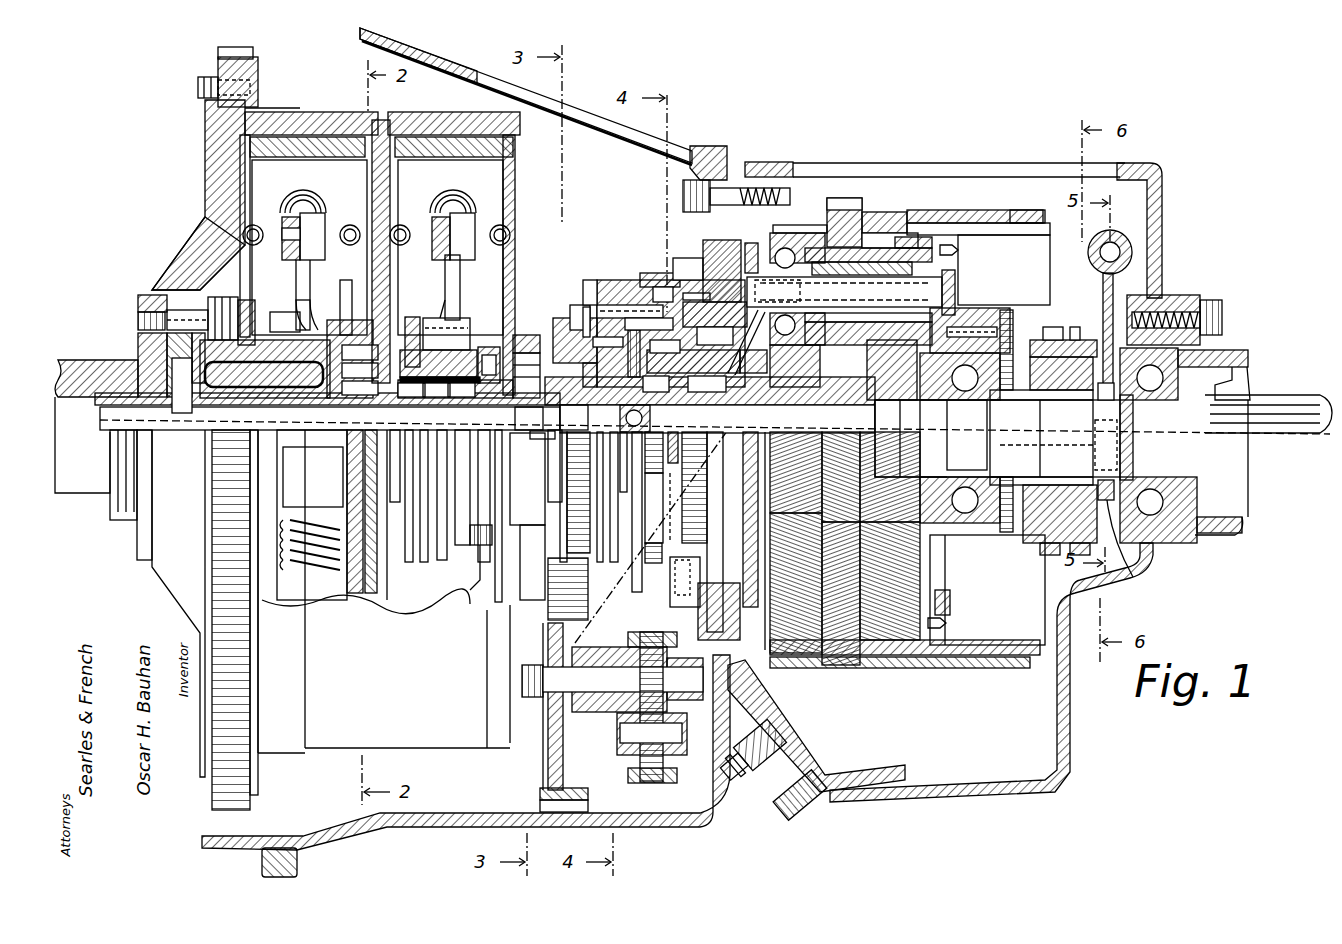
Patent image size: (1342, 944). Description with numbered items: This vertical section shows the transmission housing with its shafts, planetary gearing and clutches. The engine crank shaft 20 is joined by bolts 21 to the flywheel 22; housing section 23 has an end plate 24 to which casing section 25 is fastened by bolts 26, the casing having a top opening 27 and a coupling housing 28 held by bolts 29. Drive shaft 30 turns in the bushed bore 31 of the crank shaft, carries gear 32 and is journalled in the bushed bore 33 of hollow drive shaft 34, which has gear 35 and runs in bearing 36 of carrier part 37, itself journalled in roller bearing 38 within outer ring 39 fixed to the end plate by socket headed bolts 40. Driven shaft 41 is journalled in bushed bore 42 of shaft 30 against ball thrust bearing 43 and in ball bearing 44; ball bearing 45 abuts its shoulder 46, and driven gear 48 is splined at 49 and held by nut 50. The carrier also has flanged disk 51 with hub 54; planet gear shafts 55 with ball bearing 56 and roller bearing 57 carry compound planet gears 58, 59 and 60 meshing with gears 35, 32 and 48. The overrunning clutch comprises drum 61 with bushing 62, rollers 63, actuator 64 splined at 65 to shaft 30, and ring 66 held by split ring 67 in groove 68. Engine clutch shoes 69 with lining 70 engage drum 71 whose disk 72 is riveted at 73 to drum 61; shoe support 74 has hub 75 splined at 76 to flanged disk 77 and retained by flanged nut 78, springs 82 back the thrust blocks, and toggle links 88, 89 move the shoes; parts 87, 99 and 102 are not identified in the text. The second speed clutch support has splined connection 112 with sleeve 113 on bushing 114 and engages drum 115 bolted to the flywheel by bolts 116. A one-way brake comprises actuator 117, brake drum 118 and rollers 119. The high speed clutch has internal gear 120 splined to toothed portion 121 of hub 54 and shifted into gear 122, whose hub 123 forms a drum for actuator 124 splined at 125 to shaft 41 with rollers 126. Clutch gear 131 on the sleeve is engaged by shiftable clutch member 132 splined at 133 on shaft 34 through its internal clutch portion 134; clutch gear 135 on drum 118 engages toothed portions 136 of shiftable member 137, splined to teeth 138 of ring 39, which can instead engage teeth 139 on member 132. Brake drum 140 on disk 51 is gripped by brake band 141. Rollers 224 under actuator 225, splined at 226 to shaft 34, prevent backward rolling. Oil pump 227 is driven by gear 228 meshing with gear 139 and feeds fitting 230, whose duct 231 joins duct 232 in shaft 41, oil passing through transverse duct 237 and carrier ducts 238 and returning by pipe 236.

The engine drive shaft 20 is at (78, 375).
The bolts 21 is at (178, 283).
The flywheel 22 is at (203, 157).
The housing section 23 is at (332, 842).
The end plate portion 24 is at (720, 242).
The casing section 25 is at (770, 735).
The bolts 26 is at (712, 178).
The opening 27 is at (800, 165).
The coupling housing 28 is at (1235, 355).
The bolts 29 is at (1180, 305).
The drive shaft 30 is at (310, 435).
The bushed bore 31 is at (140, 348).
The gear 32 is at (860, 470).
The bushed bore 33 is at (720, 420).
The hollow drive shaft 34 is at (656, 350).
The gear 35 is at (795, 366).
The bearing 36 is at (655, 418).
The part of planet gear carrier 37 is at (752, 248).
The roller bearing 38 is at (665, 347).
The outer ring 39 is at (611, 300).
The socket headed bolts 40 is at (676, 262).
The driven shaft 41 is at (1275, 400).
The bushed bore 42 is at (656, 384).
The ball thrust bearing 43 is at (542, 427).
The ball bearing 44 is at (1164, 378).
The ball bearing 45 is at (960, 485).
The shoulder 46 is at (1041, 437).
The driven gear 48 is at (897, 438).
The spline 49 is at (953, 438).
The nut 50 is at (933, 370).
The flanged disk 51 is at (950, 603).
The hub 54 is at (985, 545).
The planet gear shafts 55 is at (940, 292).
The ball bearing 56 is at (783, 248).
The roller bearing 57 is at (875, 262).
The compound planet gear 58 is at (835, 204).
The compound planet gear 59 is at (855, 210).
The compound planet gear 60 is at (870, 240).
The clutch drum 61 is at (334, 307).
The bearing bushing 62 is at (278, 392).
The clutch rollers 63 is at (360, 353).
The actuator 64 is at (360, 389).
The spline 65 is at (355, 470).
The annular ring 66 is at (360, 371).
The split ring 67 is at (410, 317).
The annular groove 68 is at (350, 359).
The clutch shoes 69 is at (292, 170).
The lining 70 is at (322, 145).
The drum 71 is at (280, 125).
The disk portion 72 is at (368, 210).
The rivets 73 is at (318, 300).
The support 74 is at (294, 305).
The hub portion 75 is at (205, 410).
The spline 76 is at (235, 611).
The flanged disk 77 is at (170, 408).
The flanged nut 78 is at (300, 420).
The springs 82 is at (305, 520).
The pin 87 is at (272, 245).
The toggle links 88 is at (275, 225).
The toggle links 89 is at (283, 313).
The pressure plate 99 is at (505, 470).
The stud 102 is at (486, 539).
The splined connection 112 is at (455, 374).
The sleeve 113 is at (435, 391).
The bearing bushing 114 is at (460, 391).
The drum 115 is at (428, 125).
The bolts 116 is at (258, 88).
The actuator 117 is at (707, 384).
The brake drum 118 is at (715, 314).
The brake rollers 119 is at (715, 336).
The internal gear 120 is at (988, 310).
The toothed portion 121 is at (1013, 318).
The clutch gear 122 is at (1055, 327).
The hub 123 is at (1083, 323).
The actuator 124 is at (1058, 438).
The splined connection 125 is at (1047, 439).
The clutch rollers 126 is at (1060, 456).
The clutch gear 131 is at (488, 347).
The shiftable clutch member 132 is at (532, 545).
The spline 133 is at (527, 416).
The internal clutch portion 134 is at (527, 335).
The clutch gear 135 is at (685, 505).
The toothed segmental portions 136 is at (650, 273).
The shiftable clutch member 137 is at (598, 560).
The teeth 138 is at (640, 273).
The clutch gear 139 is at (587, 300).
The brake drum 140 is at (1025, 210).
The brake band 141 is at (980, 212).
The spring pressed rollers 224 is at (649, 325).
The actuator 225 is at (571, 305).
The splined connection 226 is at (573, 416).
The oil pump 227 is at (652, 760).
The gear 228 is at (378, 812).
The fitting 230 is at (1125, 578).
The duct 231 is at (1122, 280).
The duct 232 is at (1118, 440).
The pipe 236 is at (785, 780).
The transverse duct 237 is at (685, 488).
The ducts 238 is at (778, 291).